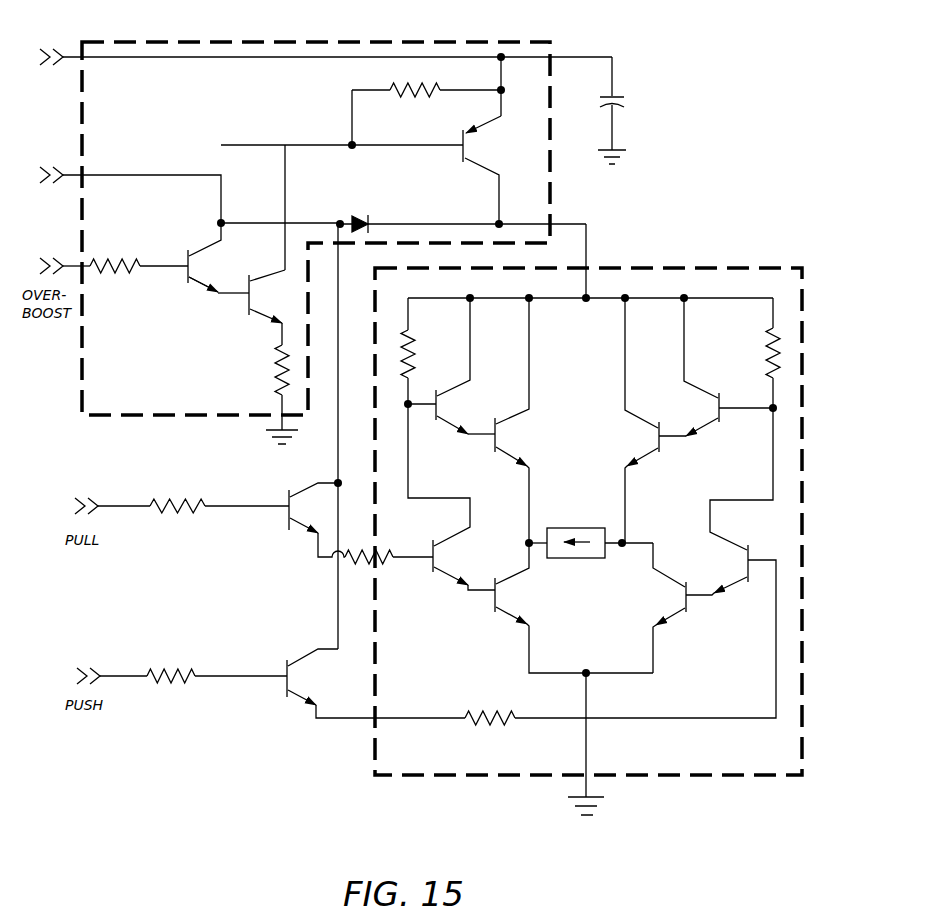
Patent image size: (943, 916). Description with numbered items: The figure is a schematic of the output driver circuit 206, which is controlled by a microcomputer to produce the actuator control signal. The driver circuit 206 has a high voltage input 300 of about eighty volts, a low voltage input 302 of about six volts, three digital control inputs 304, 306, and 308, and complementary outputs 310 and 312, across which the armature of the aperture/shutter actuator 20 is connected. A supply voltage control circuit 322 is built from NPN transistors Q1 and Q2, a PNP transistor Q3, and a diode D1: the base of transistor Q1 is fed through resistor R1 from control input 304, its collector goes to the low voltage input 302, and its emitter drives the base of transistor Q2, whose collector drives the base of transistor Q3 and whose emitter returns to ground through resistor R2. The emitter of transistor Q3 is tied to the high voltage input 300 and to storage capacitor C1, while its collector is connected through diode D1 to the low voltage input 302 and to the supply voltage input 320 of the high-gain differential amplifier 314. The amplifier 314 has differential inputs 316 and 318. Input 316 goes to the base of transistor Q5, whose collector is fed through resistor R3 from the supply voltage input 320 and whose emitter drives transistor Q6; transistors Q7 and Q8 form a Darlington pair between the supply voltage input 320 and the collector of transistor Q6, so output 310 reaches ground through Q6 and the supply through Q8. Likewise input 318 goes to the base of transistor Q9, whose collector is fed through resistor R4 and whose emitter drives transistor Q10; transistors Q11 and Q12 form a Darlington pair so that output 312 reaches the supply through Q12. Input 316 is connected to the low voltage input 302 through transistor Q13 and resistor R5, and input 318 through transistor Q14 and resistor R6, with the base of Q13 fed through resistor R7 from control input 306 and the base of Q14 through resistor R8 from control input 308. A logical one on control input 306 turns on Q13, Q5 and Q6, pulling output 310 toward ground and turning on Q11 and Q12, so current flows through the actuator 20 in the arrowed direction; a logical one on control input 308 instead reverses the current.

The aperture/shutter actuator 20 is at (590, 558).
The driver circuit 206 is at (714, 151).
The high voltage input 300 is at (137, 59).
The low voltage input 302 is at (161, 174).
The digital control input 304 is at (83, 262).
The digital control input 306 is at (125, 503).
The digital control input 308 is at (130, 673).
The complementary output 310 is at (536, 539).
The complementary output 312 is at (620, 541).
The high-gain differential amplifier 314 is at (668, 268).
The differential input 316 is at (320, 561).
The differential input 318 is at (339, 725).
The supply voltage input 320 is at (596, 238).
The supply voltage control circuit 322 is at (238, 40).
The NPN transistor Q1 is at (218, 258).
The NPN transistor Q2 is at (267, 296).
The PNP transistor Q3 is at (483, 157).
The transistor Q5 is at (451, 497).
The transistor Q6 is at (574, 679).
The transistor Q7 is at (451, 366).
The transistor Q8 is at (512, 420).
The transistor Q9 is at (729, 501).
The transistor Q10 is at (666, 608).
The transistor Q11 is at (726, 367).
The transistor Q12 is at (653, 420).
The transistor Q13 is at (313, 508).
The transistor Q14 is at (312, 677).
The resistor R1 is at (139, 278).
The resistor R2 is at (270, 383).
The resistor R3 is at (419, 351).
The resistor R4 is at (219, 521).
The resistor R5 is at (389, 571).
The resistor R6 is at (620, 642).
The resistor R7 is at (756, 353).
The resistor R8 is at (217, 690).
The storage capacitor C1 is at (622, 110).
The diode D1 is at (363, 215).